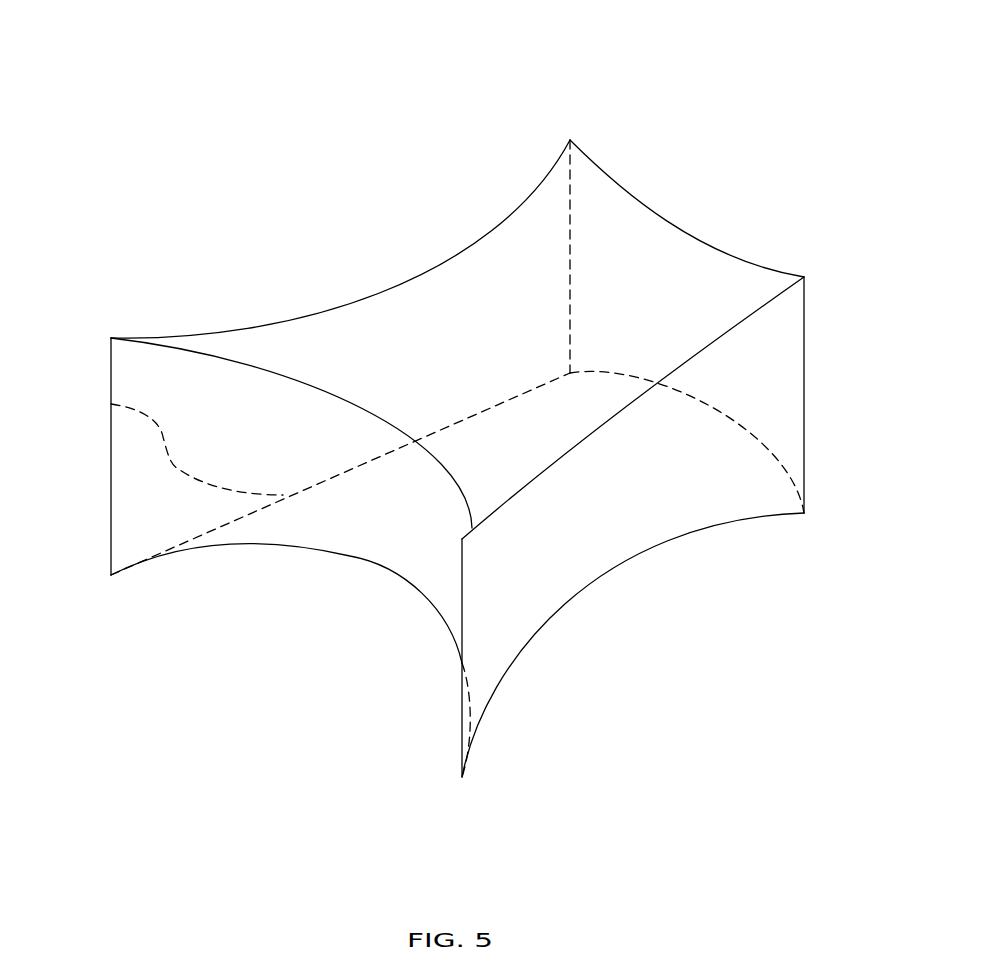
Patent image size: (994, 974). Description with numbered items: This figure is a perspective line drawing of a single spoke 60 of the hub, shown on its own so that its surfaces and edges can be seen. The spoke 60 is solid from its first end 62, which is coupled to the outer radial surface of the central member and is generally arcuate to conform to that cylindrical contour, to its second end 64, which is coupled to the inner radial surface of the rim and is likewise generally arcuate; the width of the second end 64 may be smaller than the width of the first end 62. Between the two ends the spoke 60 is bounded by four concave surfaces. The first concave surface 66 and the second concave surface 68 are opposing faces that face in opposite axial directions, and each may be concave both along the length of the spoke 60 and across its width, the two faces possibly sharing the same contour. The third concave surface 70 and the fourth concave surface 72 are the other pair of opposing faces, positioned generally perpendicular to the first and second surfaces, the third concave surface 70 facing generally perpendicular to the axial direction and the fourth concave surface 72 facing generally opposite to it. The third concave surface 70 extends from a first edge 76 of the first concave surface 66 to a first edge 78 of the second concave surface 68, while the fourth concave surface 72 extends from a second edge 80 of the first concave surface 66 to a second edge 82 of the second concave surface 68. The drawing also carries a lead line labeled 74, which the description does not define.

The spoke 60 is at (219, 128).
The first end 62 is at (383, 522).
The second end 64 is at (707, 313).
The first concave surface 66 is at (524, 335).
The second concave surface 68 is at (536, 512).
The third concave surface 70 is at (400, 360).
The fourth concave surface 72 is at (615, 498).
The lower left edge 74 is at (182, 595).
The first edge of the first concave surface 76 is at (430, 272).
The first edge of the second concave surface 78 is at (111, 404).
The second edge of the first concave surface 80 is at (735, 325).
The second edge of the second concave surface 82 is at (743, 518).